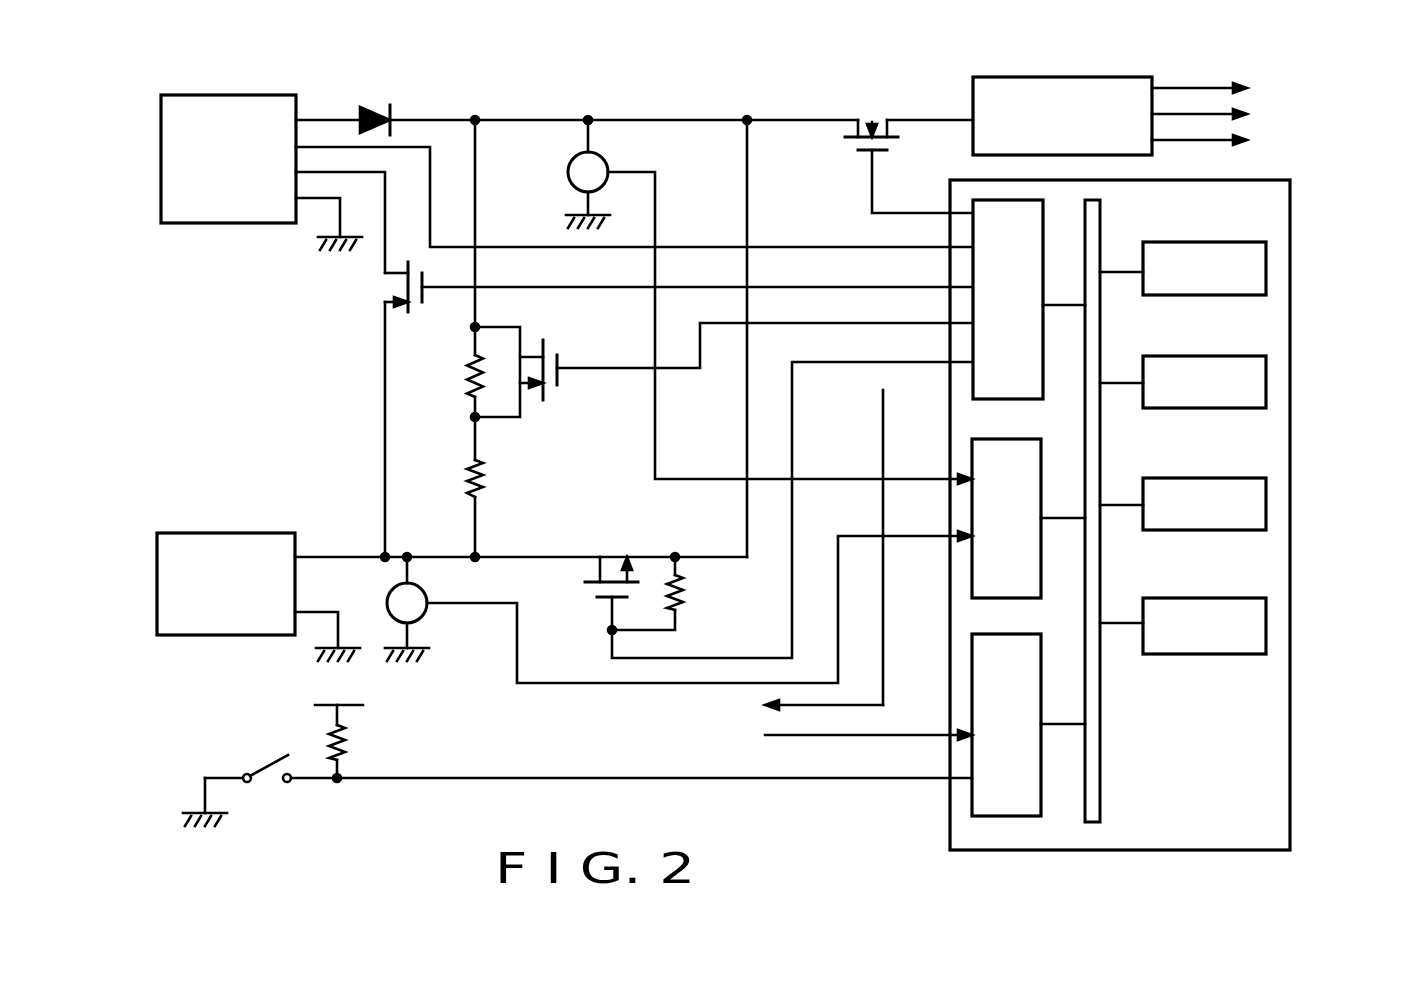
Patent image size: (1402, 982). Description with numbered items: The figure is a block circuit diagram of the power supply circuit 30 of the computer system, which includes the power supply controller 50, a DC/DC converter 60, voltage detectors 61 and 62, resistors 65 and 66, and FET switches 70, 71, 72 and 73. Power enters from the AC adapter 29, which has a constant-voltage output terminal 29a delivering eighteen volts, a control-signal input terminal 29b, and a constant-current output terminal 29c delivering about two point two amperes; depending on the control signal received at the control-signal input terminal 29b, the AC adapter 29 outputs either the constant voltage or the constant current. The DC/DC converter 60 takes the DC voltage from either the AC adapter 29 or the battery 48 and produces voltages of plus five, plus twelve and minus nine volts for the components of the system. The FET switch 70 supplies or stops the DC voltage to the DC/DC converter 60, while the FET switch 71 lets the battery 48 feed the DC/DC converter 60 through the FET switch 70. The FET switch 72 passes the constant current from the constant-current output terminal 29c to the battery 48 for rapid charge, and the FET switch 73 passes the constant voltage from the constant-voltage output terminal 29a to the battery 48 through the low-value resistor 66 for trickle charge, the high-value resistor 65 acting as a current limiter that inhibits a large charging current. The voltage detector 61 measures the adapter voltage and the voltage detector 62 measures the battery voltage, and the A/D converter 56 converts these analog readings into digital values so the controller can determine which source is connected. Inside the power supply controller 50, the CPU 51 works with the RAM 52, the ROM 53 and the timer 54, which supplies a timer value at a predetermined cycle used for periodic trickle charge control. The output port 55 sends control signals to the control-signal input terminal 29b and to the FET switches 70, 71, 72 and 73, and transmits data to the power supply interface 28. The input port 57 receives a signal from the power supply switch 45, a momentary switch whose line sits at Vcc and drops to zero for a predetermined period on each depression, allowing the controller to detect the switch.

The AC adapter 29 is at (205, 95).
The constant-voltage output terminal 29a is at (296, 118).
The control-signal input terminal 29b is at (296, 147).
The constant-current output terminal 29c is at (296, 172).
The power supply circuit 30 is at (303, 425).
The power supply switch 45 is at (268, 760).
The battery 48 is at (193, 532).
The power supply controller 50 is at (1149, 515).
The CPU 51 is at (1168, 242).
The RAM 52 is at (1172, 356).
The ROM 53 is at (1172, 478).
The timer 54 is at (1180, 654).
The output port 55 is at (1045, 360).
The A/D converter 56 is at (1041, 555).
The input port 57 is at (1041, 770).
The DC/DC converter 60 is at (1008, 78).
The voltage detector 61 is at (568, 170).
The voltage detector 62 is at (427, 612).
The resistor 65 is at (470, 382).
The resistor 66 is at (468, 485).
The FET switch 70 is at (872, 118).
The FET switch 71 is at (612, 553).
The FET switch 72 is at (395, 291).
The FET switch 73 is at (557, 390).
The power supply interface 28 is at (695, 556).